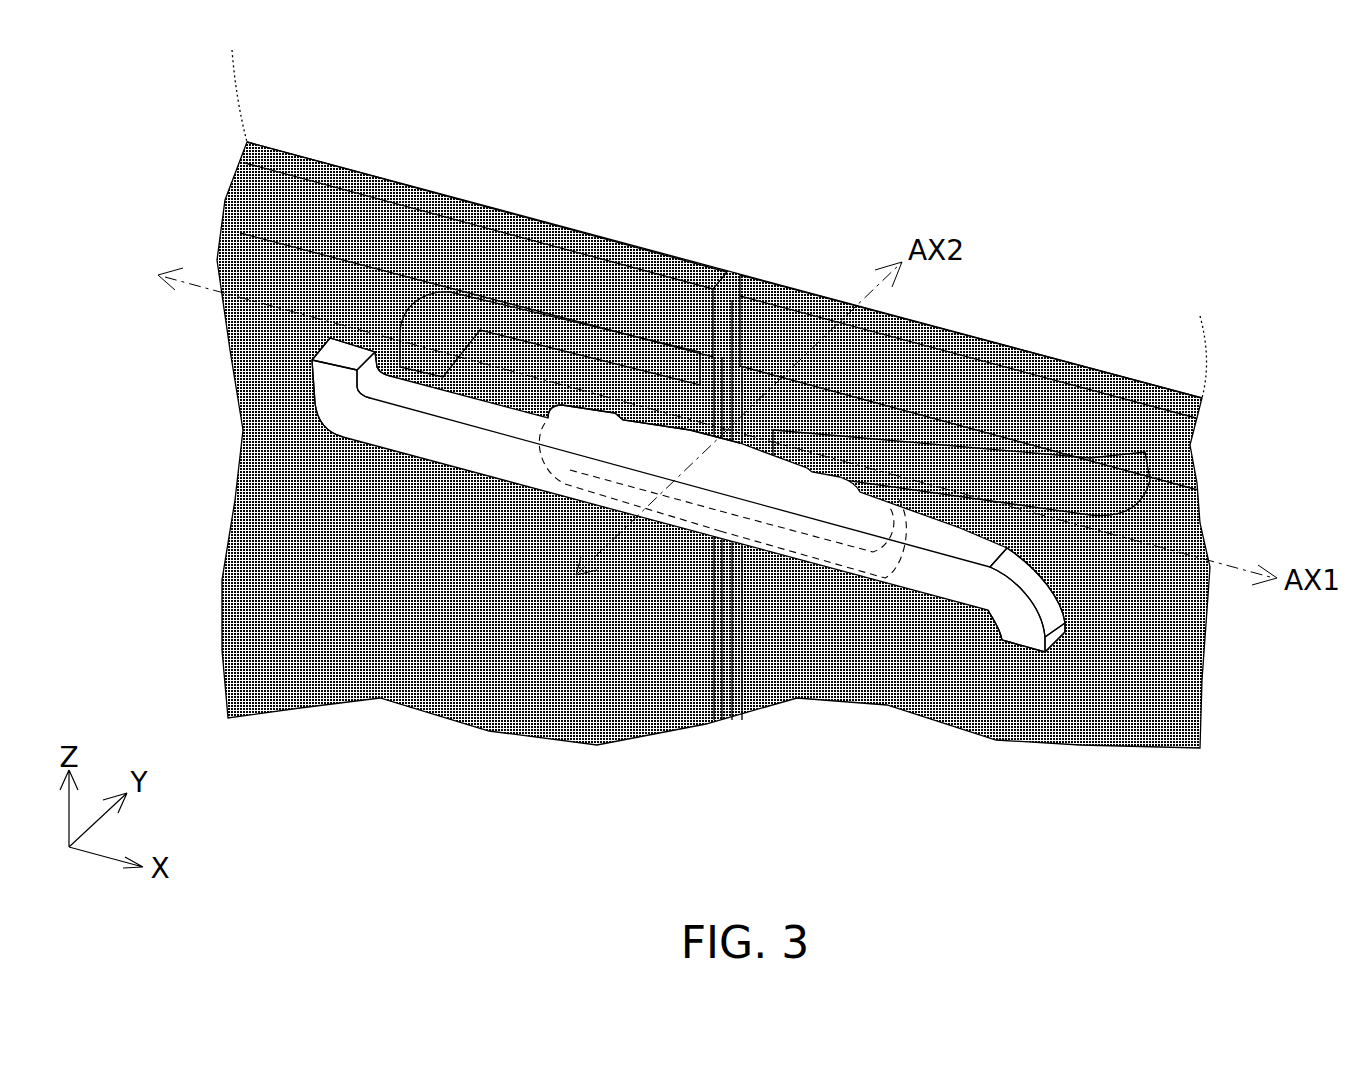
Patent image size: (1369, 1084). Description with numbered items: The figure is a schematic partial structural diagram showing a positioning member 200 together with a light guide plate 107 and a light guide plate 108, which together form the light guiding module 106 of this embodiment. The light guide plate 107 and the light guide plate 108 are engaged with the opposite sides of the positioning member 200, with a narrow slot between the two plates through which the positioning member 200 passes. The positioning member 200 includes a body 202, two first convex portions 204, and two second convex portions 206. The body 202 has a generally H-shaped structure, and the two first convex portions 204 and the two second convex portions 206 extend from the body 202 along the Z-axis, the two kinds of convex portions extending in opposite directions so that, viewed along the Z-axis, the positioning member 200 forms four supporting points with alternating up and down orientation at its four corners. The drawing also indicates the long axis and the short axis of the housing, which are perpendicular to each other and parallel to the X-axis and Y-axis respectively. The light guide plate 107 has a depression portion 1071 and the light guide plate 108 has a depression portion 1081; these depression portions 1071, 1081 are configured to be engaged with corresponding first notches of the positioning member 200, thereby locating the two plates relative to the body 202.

The light guiding module 106 is at (1010, 68).
The light guide plate 107 is at (603, 248).
The light guide plate 108 is at (1030, 358).
The depression portion 1071 is at (673, 522).
The depression portion 1081 is at (802, 556).
The positioning member 200 is at (519, 488).
The body 202 is at (657, 455).
The first convex portion 204 is at (422, 340).
The second convex portion 206 is at (330, 390).